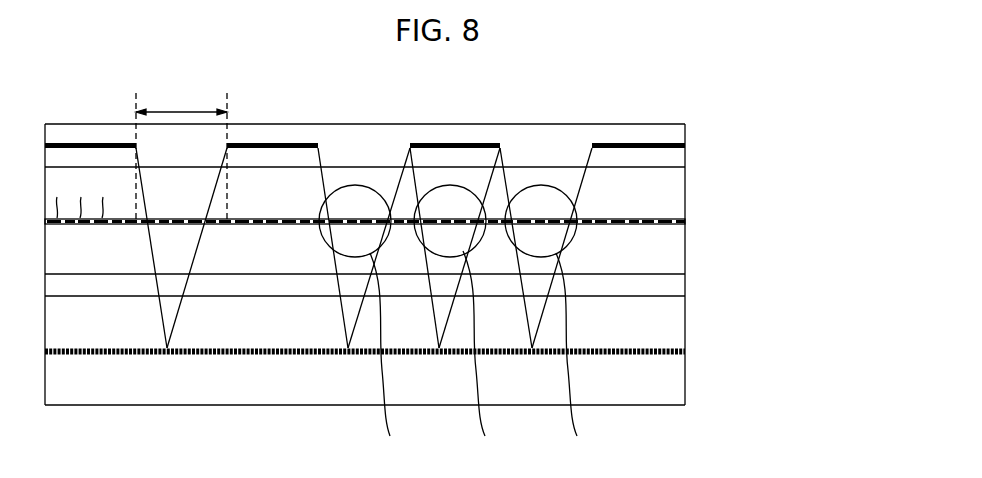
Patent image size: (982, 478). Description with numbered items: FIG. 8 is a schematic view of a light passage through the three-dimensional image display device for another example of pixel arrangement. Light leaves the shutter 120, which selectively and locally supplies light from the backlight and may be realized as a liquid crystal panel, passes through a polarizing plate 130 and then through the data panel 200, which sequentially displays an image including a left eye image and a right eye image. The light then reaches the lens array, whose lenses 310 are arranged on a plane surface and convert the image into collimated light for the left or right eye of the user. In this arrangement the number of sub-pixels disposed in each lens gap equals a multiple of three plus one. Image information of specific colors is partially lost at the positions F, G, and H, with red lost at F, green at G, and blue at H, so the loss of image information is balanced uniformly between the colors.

The lens 310 is at (688, 124).
The data panel 200 is at (688, 274).
The polarizing plate 130 is at (688, 296).
The shutter 120 is at (712, 296).